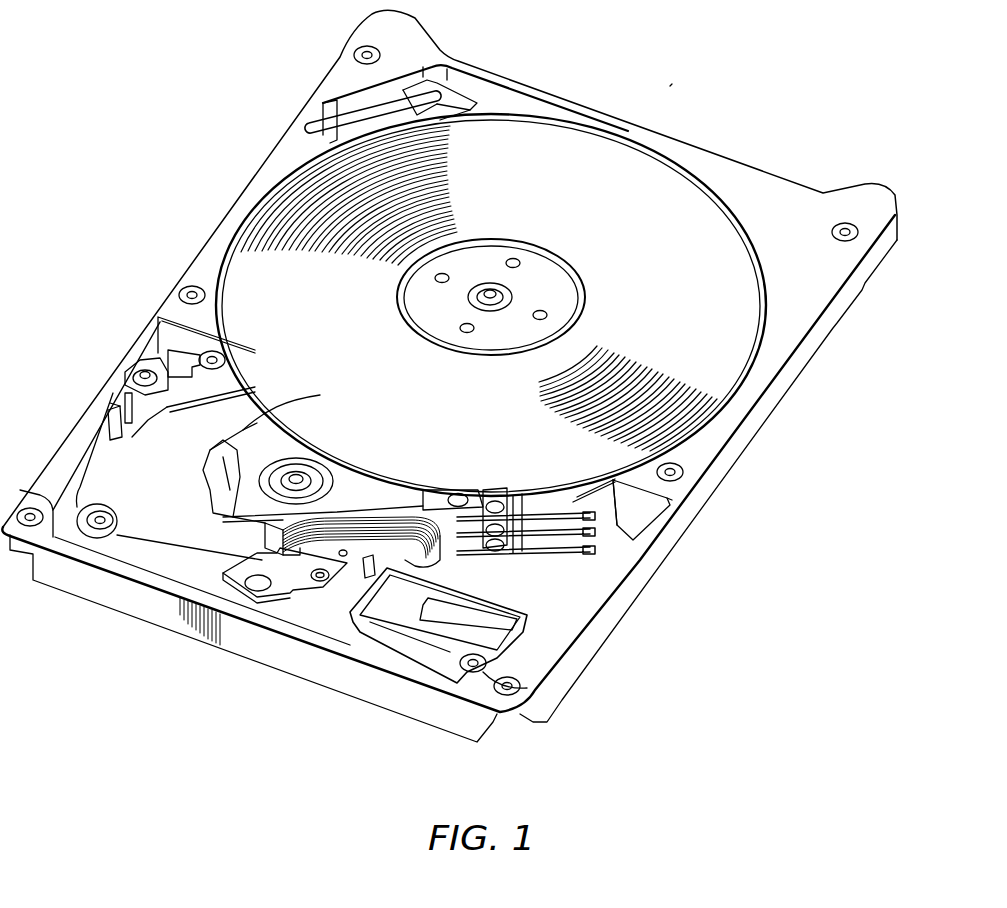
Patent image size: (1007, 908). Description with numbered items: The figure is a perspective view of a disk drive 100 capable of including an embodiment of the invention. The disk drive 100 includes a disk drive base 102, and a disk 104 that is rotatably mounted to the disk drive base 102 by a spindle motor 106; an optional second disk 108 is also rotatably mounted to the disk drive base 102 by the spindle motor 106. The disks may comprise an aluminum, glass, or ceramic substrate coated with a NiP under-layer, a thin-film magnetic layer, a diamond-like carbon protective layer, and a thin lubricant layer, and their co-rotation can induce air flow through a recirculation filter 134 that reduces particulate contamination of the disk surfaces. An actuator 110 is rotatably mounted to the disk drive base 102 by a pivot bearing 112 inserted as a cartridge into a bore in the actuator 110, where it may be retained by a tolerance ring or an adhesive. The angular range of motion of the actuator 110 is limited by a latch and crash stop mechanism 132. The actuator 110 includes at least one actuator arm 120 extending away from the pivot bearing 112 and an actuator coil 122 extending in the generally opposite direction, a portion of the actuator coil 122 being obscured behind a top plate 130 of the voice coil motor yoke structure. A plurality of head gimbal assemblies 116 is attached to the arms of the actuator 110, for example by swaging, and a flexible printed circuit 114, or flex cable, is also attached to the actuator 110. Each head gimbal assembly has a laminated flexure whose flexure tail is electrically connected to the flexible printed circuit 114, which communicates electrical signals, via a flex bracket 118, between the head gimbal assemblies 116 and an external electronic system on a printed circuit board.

The disk drive 100 is at (670, 87).
The disk drive base 102 is at (763, 183).
The disk 104 is at (298, 310).
The spindle motor 106 is at (492, 257).
The second disk 108 is at (595, 487).
The actuator 110 is at (355, 480).
The pivot bearing 112 is at (282, 468).
The flexible printed circuit 114 is at (367, 523).
The head gimbal assemblies 116 is at (532, 520).
The flex bracket 118 is at (420, 627).
The actuator arm 120 is at (435, 493).
The actuator coil 122 is at (210, 472).
The top plate 130 is at (147, 517).
The latch and crash stop mechanism 132 is at (130, 386).
The recirculation filter 134 is at (363, 113).